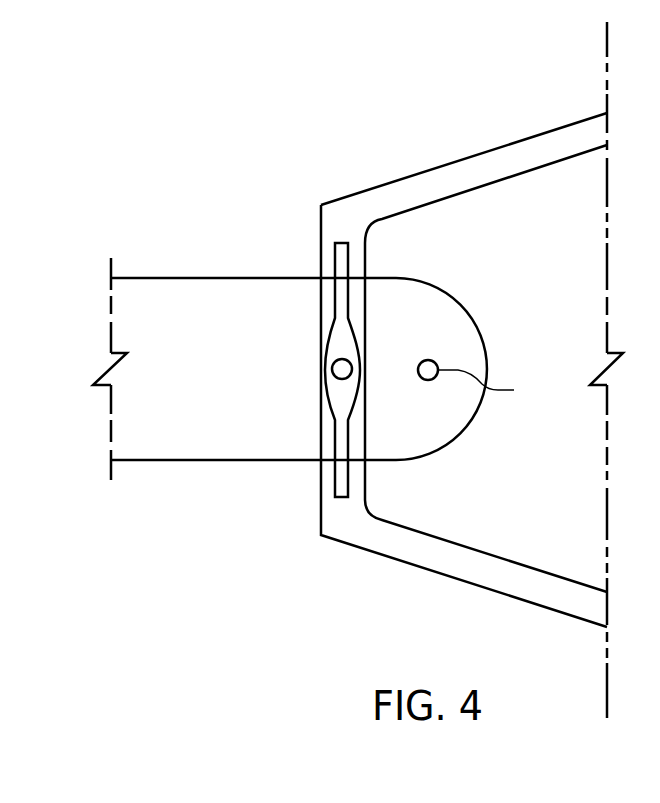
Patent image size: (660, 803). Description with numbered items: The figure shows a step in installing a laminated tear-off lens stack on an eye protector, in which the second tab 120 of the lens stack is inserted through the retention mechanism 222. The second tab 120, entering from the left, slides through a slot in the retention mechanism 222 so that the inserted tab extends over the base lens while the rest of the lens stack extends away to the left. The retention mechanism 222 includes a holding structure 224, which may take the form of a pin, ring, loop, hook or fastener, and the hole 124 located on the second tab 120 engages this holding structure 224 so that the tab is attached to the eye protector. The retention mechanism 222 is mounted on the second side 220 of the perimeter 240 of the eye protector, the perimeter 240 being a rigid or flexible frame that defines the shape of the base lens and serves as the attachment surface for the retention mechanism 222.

The second tab 120 is at (435, 296).
The hole 124 is at (486, 382).
The second side 220 is at (335, 528).
The retention mechanism 222 is at (335, 257).
The holding structure 224 is at (332, 369).
The perimeter 240 is at (534, 143).